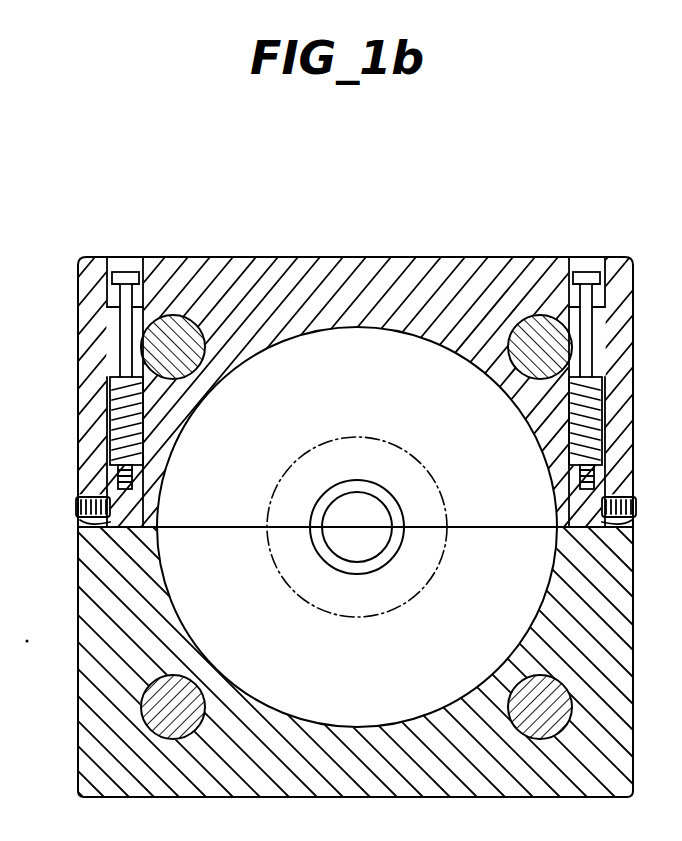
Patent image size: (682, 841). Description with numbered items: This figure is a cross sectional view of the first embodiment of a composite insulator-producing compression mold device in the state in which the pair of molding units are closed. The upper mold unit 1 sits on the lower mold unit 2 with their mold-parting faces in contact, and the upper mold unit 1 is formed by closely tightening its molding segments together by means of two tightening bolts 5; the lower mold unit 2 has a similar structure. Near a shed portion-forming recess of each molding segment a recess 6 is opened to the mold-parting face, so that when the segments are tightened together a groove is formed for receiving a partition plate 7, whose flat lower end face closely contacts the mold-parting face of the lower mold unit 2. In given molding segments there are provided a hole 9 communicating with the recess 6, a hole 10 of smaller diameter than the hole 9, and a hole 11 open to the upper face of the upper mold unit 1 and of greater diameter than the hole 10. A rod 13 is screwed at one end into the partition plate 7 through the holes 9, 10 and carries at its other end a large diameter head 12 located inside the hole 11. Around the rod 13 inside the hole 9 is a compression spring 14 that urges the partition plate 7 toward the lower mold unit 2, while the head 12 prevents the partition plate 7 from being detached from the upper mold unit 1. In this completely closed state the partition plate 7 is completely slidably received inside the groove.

The upper mold unit 1 is at (615, 318).
The lower mold unit 2 is at (610, 689).
The tightening bolt 5 is at (540, 315).
The recess 6 is at (112, 490).
The partition plate 7 is at (108, 530).
The hole 9 is at (110, 430).
The hole 10 is at (119, 352).
The hole 11 is at (120, 294).
The head 12 is at (127, 274).
The rod 13 is at (150, 308).
The compression spring 14 is at (116, 440).